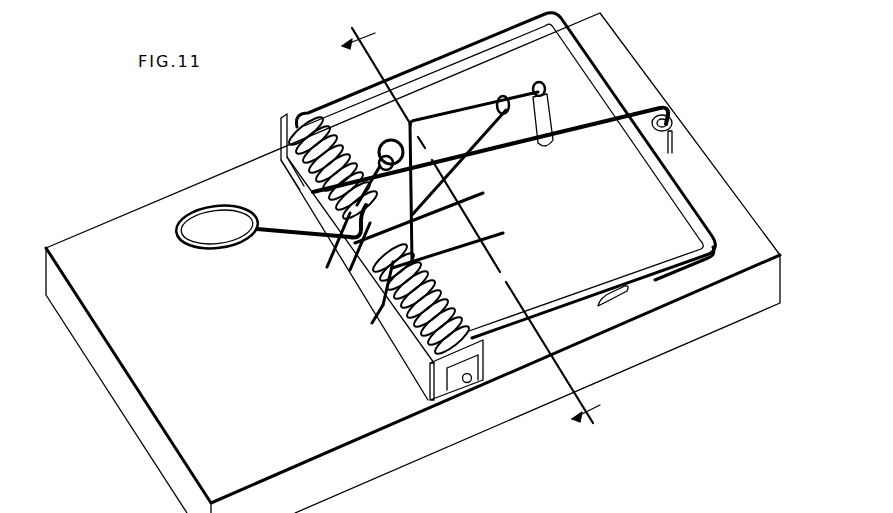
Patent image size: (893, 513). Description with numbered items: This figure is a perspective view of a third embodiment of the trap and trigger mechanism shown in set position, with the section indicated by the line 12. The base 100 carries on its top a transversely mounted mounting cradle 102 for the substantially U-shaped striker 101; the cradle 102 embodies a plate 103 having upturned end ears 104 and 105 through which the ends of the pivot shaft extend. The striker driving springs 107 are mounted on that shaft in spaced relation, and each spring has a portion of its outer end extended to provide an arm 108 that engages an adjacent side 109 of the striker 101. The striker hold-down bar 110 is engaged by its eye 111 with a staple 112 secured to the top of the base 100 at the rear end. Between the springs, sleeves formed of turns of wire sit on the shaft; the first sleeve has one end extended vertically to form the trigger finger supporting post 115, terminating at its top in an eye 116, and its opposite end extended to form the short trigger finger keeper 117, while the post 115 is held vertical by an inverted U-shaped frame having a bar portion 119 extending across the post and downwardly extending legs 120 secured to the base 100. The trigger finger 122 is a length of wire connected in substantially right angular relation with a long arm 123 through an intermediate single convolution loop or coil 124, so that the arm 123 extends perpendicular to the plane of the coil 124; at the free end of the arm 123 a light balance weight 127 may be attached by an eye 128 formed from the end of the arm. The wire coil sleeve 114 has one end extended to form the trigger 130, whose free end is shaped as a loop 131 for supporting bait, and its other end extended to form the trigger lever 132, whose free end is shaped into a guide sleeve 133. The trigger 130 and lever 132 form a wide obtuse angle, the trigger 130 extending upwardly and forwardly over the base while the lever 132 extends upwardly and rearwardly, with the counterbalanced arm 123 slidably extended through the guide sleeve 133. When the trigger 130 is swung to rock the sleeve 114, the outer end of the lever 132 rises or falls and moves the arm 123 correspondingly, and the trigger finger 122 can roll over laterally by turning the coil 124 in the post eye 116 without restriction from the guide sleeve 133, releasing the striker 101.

The section line 12- 12 is at (475, 228).
The base 100 is at (722, 188).
The striker 101 is at (618, 78).
The mounting cradle 102 is at (408, 362).
The plate 103 is at (427, 382).
The upturned end ear 104 is at (281, 133).
The upturned end ear 105 is at (448, 392).
The striker driving springs 107 is at (312, 191).
The arm 108 is at (602, 298).
The side of striker 109 is at (657, 268).
The striker hold-down bar 110 is at (659, 106).
The eye 111 is at (678, 111).
The staple 112 is at (674, 139).
The sleeve 114 is at (355, 261).
The trigger finger supporting post 115 is at (326, 206).
The eye 116 is at (379, 160).
The trigger finger keeper 117 is at (432, 260).
The bar portion 119 is at (376, 300).
The legs 120 is at (373, 322).
The trigger finger 122 is at (414, 235).
The long arm 123 is at (455, 115).
The single convolution loop or coil 124 is at (390, 140).
The balance weight 127 is at (544, 122).
The eye 128 is at (541, 82).
The trigger 130 is at (292, 237).
The loop 131 is at (205, 243).
The trigger lever 132 is at (460, 167).
The guide sleeve 133 is at (506, 98).